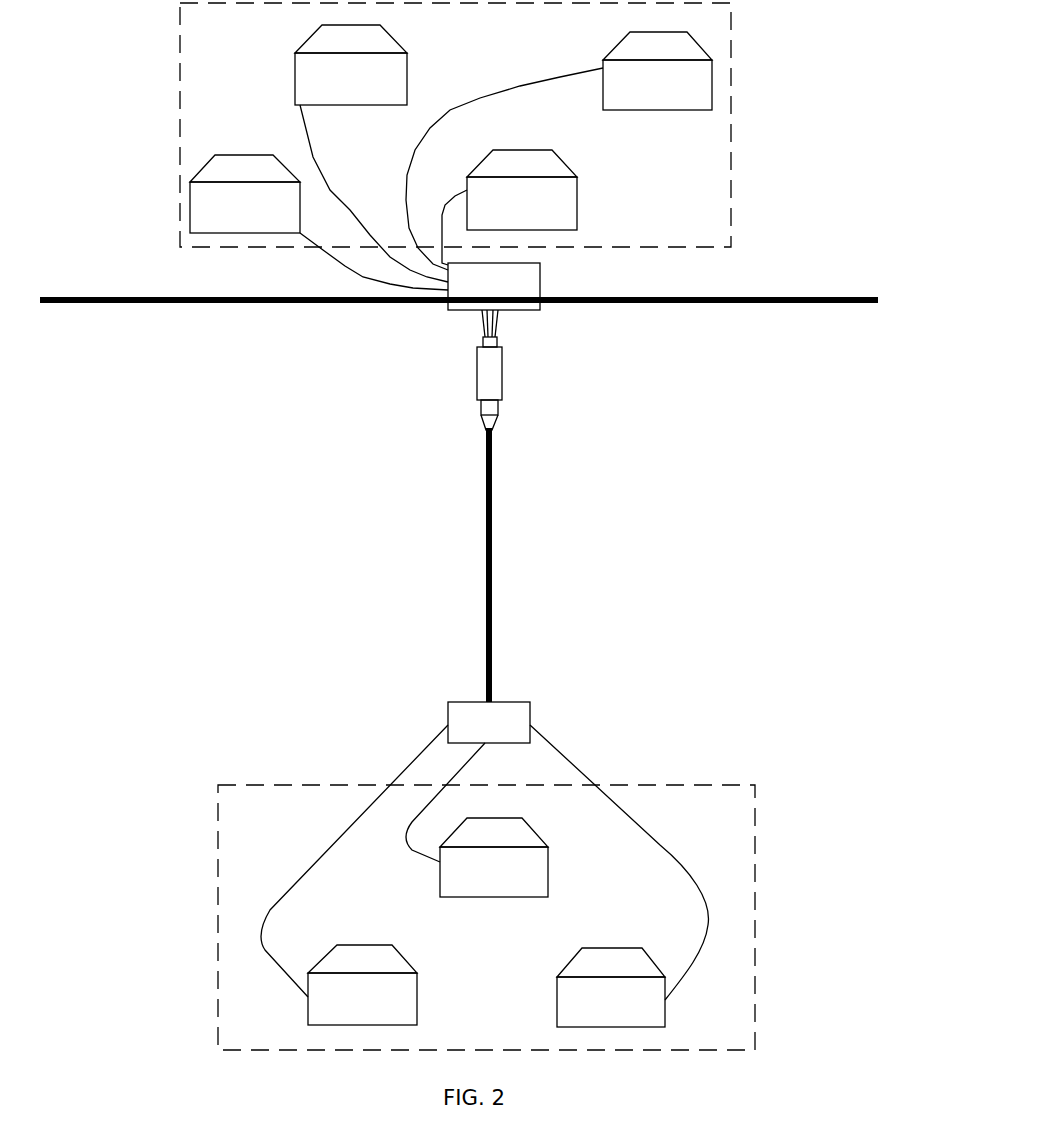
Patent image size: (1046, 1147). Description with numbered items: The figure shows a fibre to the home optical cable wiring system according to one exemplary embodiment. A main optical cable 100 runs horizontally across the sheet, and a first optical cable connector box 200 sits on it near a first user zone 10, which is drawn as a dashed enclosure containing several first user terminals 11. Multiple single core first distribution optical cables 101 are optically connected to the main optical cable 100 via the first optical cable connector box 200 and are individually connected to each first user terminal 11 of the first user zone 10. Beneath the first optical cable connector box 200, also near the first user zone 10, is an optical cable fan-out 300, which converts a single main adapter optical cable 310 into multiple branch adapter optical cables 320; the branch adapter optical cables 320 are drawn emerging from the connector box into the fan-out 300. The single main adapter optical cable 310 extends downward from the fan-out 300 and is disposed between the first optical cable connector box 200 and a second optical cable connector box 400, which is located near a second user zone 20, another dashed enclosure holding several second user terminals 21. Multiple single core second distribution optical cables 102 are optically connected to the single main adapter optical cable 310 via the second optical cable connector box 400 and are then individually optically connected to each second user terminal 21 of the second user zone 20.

The first user zone 10 is at (732, 92).
The first user terminal 11 is at (310, 75).
The first distribution optical cable 101 is at (473, 97).
The main optical cable 100 is at (148, 303).
The first optical cable connector box 200 is at (528, 298).
The branch adapter optical cable 320 is at (480, 317).
The optical cable fan-out 300 is at (483, 375).
The single main adapter optical cable 310 is at (492, 515).
The second optical cable connector box 400 is at (462, 712).
The second user zone 20 is at (217, 825).
The second user terminal 21 is at (532, 877).
The second distribution optical cable 102 is at (315, 860).